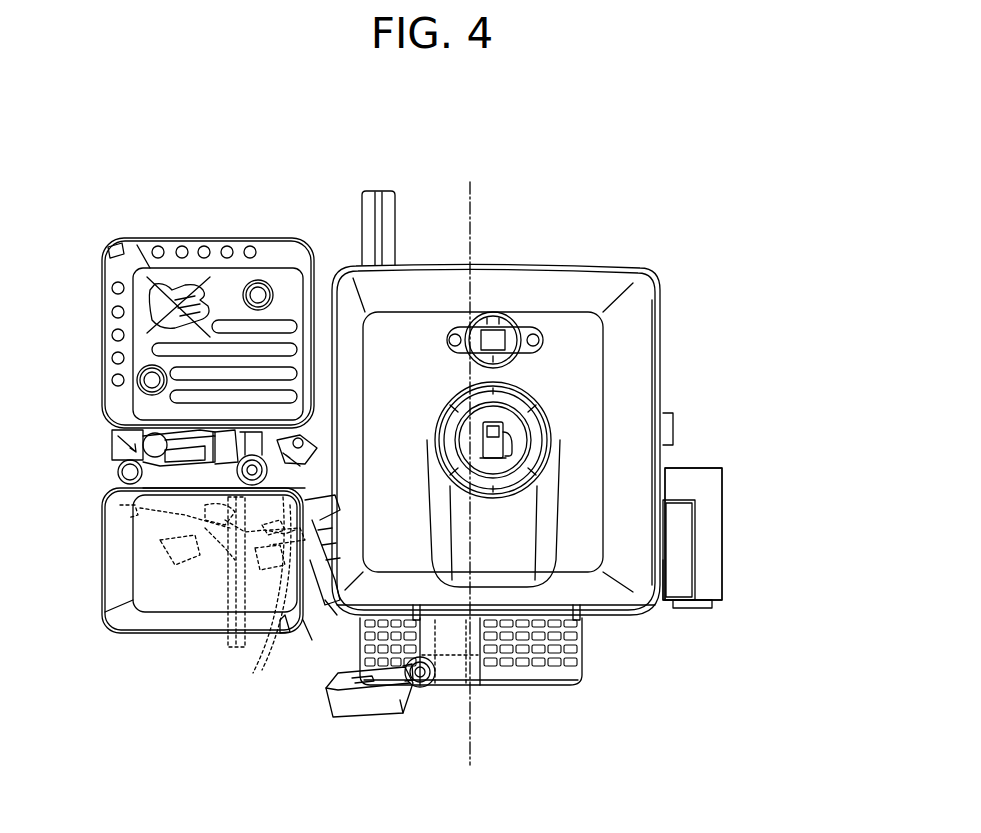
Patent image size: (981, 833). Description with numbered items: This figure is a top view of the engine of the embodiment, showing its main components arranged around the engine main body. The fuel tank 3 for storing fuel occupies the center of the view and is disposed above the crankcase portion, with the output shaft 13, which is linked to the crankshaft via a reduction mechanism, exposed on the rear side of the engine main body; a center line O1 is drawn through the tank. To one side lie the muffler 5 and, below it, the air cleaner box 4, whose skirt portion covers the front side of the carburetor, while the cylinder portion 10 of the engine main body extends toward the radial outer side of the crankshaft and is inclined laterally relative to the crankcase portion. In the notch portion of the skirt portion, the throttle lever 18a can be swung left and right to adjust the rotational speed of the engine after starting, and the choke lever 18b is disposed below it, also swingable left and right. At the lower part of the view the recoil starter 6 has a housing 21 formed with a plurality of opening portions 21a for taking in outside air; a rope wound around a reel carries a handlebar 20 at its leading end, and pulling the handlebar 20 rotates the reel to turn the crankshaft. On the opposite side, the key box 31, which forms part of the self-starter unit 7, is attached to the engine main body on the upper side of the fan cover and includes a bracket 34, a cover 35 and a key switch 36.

The fuel tank 3 is at (583, 288).
The air cleaner box 4 is at (162, 622).
The muffler 5 is at (168, 248).
The recoil starter 6 is at (510, 707).
The self-starter unit 7 is at (693, 534).
The cylinder portion 10 is at (118, 449).
The output shaft 13 is at (397, 215).
The throttle lever 18a is at (327, 622).
The choke lever 18b is at (255, 640).
The handlebar 20 is at (360, 707).
The housing 21 is at (510, 697).
The opening portions 21a is at (557, 642).
The key box 31 is at (698, 477).
The bracket 34 is at (667, 592).
The cover 35 is at (712, 520).
The key switch 36 is at (708, 605).
The center axis O1 is at (470, 215).